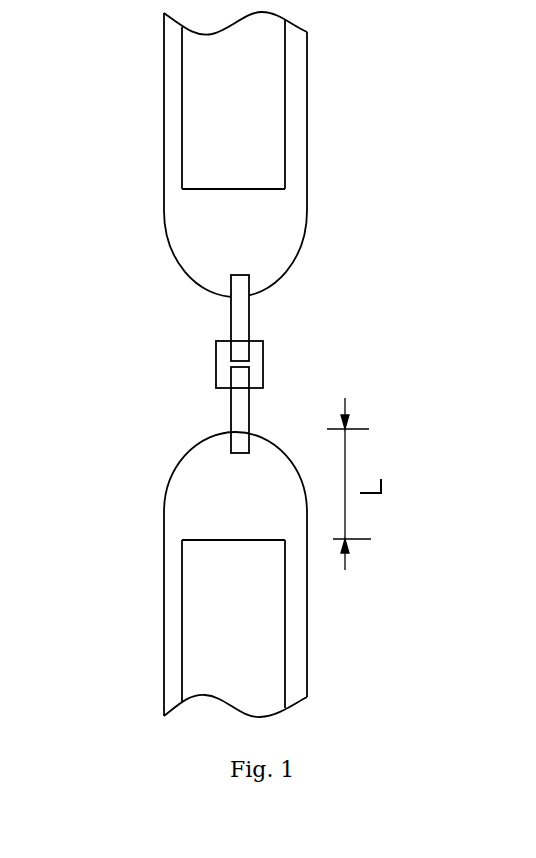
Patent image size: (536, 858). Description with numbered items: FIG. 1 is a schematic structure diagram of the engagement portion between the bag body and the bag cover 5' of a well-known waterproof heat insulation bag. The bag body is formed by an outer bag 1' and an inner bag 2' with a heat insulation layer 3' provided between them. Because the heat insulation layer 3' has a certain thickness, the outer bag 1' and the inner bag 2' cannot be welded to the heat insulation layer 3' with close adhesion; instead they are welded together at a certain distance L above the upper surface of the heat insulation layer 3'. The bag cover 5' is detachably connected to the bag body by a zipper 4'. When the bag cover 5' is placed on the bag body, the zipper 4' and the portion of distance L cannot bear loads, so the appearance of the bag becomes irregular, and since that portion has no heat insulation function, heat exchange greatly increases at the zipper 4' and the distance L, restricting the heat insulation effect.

The outer bag 1' is at (236, 574).
The inner bag 2' is at (286, 574).
The heat insulation layer 3' is at (296, 624).
The zipper 4' is at (287, 364).
The bag cover 5' is at (286, 154).